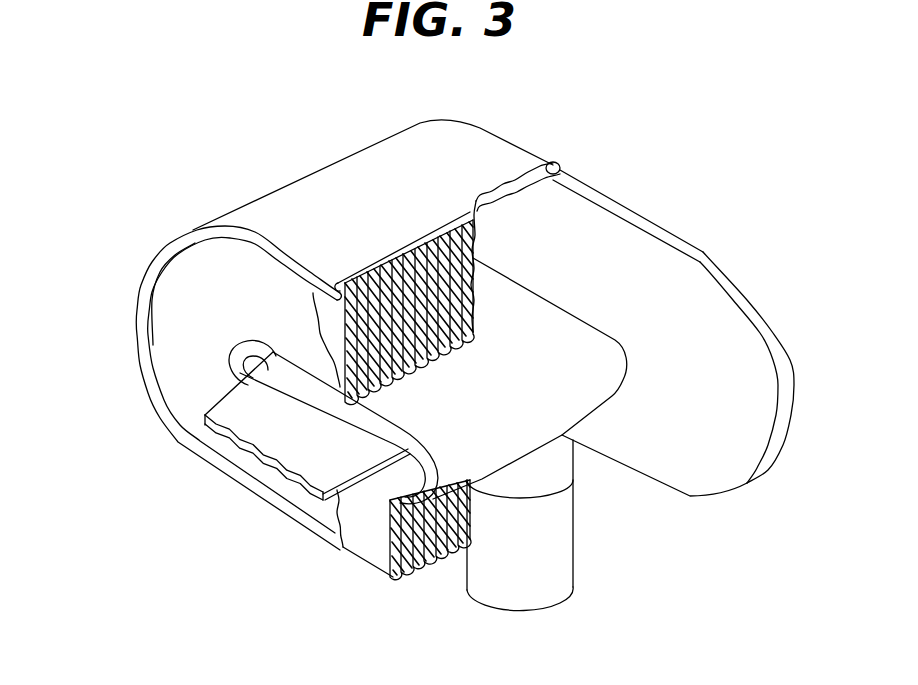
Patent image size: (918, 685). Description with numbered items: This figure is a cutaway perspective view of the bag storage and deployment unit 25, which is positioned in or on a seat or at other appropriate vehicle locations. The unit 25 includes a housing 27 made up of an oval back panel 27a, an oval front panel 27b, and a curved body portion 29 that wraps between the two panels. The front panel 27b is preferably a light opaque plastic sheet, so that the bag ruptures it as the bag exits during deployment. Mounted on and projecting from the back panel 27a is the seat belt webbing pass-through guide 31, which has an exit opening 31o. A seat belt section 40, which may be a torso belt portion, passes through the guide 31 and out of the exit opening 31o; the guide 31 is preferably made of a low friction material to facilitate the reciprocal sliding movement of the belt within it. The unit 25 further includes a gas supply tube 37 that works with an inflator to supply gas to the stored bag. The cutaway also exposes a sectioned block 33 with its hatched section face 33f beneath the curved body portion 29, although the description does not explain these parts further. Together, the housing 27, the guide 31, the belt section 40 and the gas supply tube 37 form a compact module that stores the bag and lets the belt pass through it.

The bag storage and deployment unit 25 is at (496, 129).
The housing 27 is at (588, 178).
The oval back panel 27a is at (705, 252).
The oval front panel 27b is at (180, 318).
The curved body portion 29 is at (332, 190).
The seat belt webbing pass-through guide 31 is at (543, 327).
The exit opening 31o is at (247, 367).
The elastic block 33 is at (370, 545).
The sectioned face of elastic block 33f is at (440, 348).
The gas supply tube 37 is at (557, 566).
The seat belt section 40 is at (376, 446).